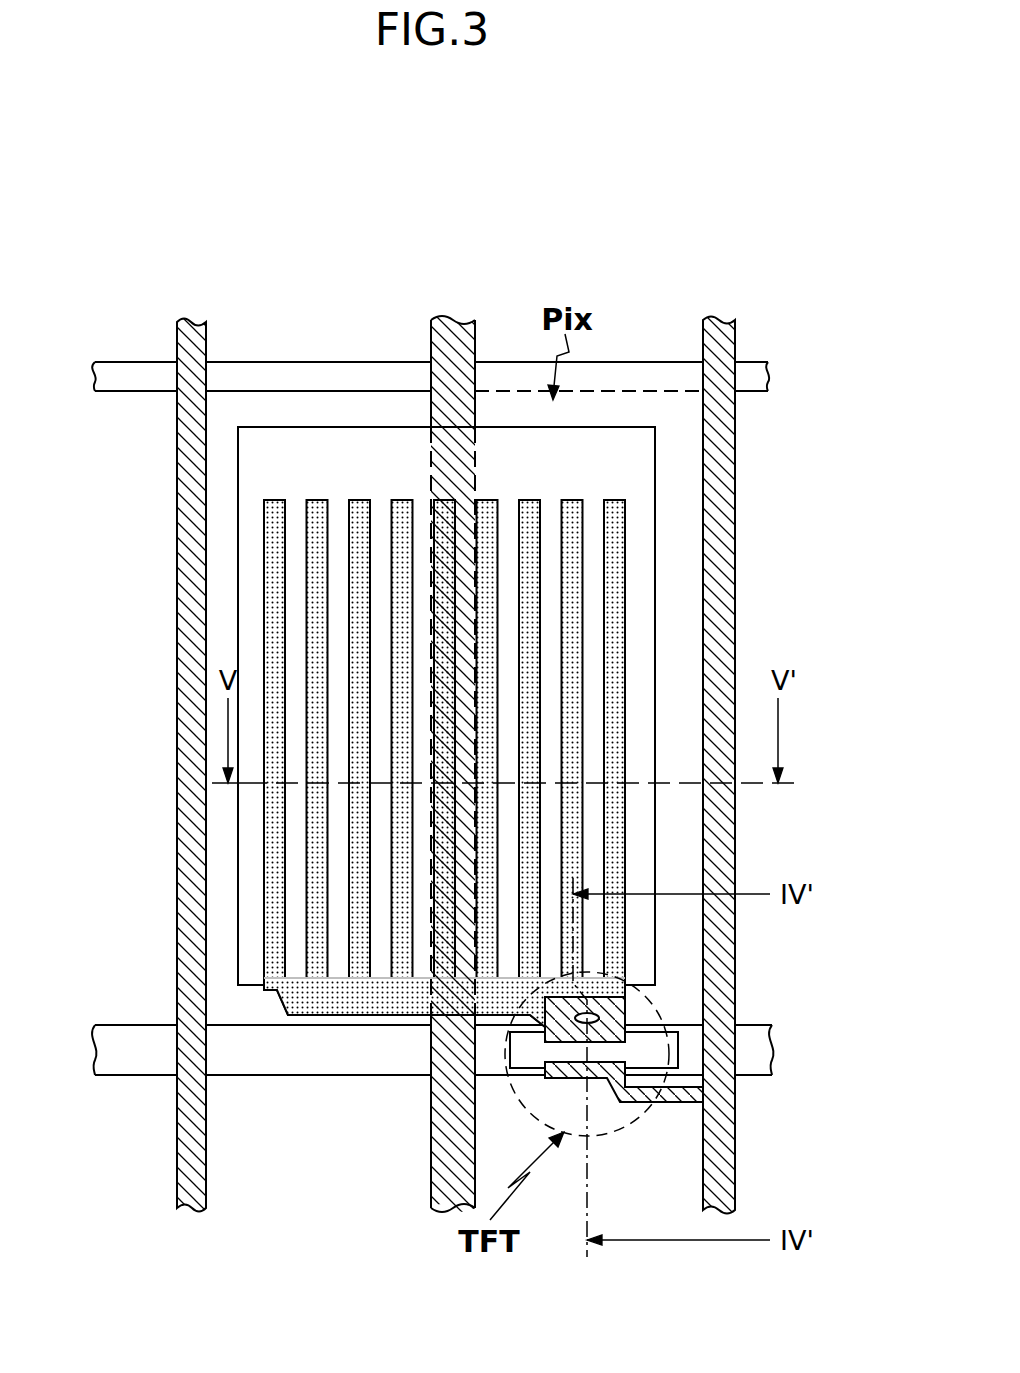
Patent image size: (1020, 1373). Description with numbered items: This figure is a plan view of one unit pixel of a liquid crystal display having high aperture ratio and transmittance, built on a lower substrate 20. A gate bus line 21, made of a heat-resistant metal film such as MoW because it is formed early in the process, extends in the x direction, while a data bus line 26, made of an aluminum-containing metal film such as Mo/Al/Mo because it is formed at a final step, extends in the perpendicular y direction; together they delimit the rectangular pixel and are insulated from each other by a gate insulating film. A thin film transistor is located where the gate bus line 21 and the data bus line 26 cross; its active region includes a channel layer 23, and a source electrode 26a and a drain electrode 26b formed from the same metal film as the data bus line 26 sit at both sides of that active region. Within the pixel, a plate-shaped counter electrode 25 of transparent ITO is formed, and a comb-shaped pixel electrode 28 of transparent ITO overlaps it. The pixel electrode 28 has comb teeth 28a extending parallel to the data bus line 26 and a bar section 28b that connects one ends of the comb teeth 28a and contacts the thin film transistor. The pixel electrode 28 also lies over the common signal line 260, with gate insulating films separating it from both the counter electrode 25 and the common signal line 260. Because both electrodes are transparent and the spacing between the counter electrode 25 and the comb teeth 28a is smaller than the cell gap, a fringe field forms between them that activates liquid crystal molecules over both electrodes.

The lower substrate 20 is at (683, 1152).
The gate bus line 21 is at (758, 378).
The channel layer 23 is at (700, 1094).
The counter electrode 25 is at (645, 597).
The data bus line 26 is at (720, 510).
The common signal line 260 is at (450, 1158).
The source electrode 26a is at (593, 1066).
The drain electrode 26b is at (733, 985).
The pixel electrode 28 is at (333, 763).
The comb teeth 28a is at (268, 900).
The bar section 28b is at (277, 1000).